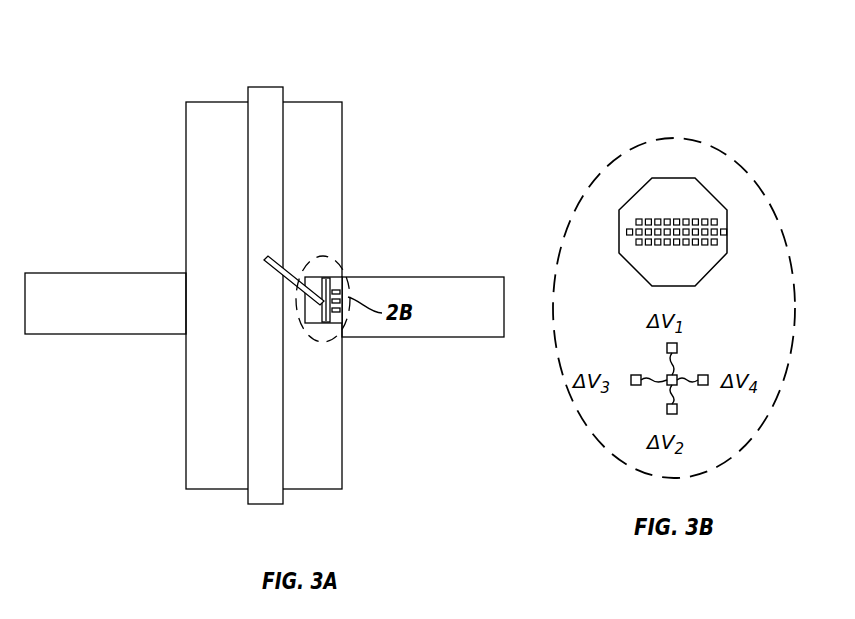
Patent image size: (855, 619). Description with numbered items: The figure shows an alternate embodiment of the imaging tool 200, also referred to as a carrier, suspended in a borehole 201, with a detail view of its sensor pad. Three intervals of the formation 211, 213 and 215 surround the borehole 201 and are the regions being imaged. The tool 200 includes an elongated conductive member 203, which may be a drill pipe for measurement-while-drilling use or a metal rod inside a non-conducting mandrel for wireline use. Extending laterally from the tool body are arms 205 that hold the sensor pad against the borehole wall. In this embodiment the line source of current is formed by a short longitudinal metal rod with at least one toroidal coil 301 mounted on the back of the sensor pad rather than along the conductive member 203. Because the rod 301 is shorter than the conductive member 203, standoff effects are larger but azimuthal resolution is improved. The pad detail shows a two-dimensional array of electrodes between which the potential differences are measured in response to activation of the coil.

The imaging tool 200 is at (254, 278).
The borehole 201 is at (193, 116).
The conductive member 203 is at (265, 87).
The arm 205 is at (342, 258).
The formation interval 211 is at (88, 188).
The formation interval 213 is at (75, 323).
The formation interval 215 is at (88, 418).
The longitudinal metal rod with toroidal coil 301 is at (321, 334).